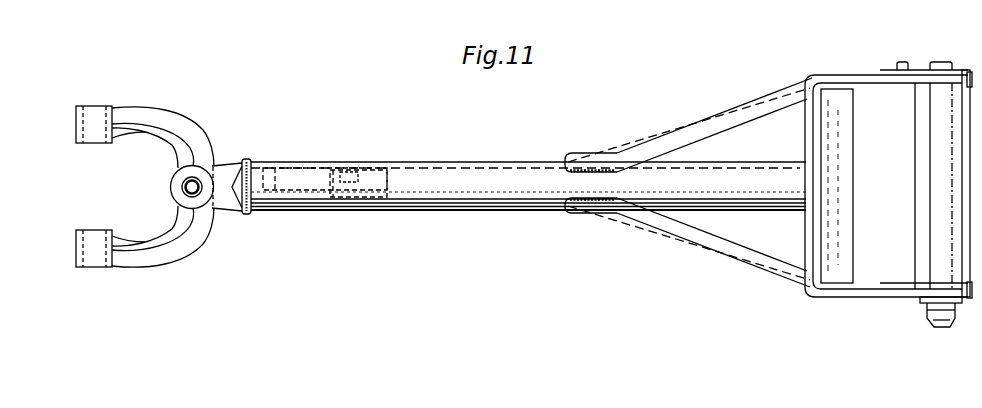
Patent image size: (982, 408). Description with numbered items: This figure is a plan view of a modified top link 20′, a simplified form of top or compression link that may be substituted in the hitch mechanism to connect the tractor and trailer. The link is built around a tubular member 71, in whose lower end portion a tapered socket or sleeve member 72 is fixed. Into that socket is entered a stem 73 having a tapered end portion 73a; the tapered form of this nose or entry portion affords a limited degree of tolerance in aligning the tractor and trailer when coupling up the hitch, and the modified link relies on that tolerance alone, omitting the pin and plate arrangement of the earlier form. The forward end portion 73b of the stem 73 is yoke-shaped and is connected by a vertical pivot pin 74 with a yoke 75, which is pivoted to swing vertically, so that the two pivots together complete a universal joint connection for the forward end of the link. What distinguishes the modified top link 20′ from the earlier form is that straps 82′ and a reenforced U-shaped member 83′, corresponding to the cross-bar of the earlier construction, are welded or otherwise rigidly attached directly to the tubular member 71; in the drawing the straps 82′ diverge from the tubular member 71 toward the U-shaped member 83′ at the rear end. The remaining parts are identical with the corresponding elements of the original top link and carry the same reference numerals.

The modified top link 20′ is at (460, 216).
The tubular member 71 is at (445, 162).
The tapered socket or sleeve member 72 is at (347, 177).
The stem 73 is at (263, 170).
The tapered end portion 73a is at (297, 180).
The forward end portion 73b is at (228, 163).
The vertical pivot pin 74 is at (185, 183).
The yoke 75 is at (186, 262).
The straps 82′ is at (773, 74).
The reenforced U-shaped member 83′ is at (808, 229).